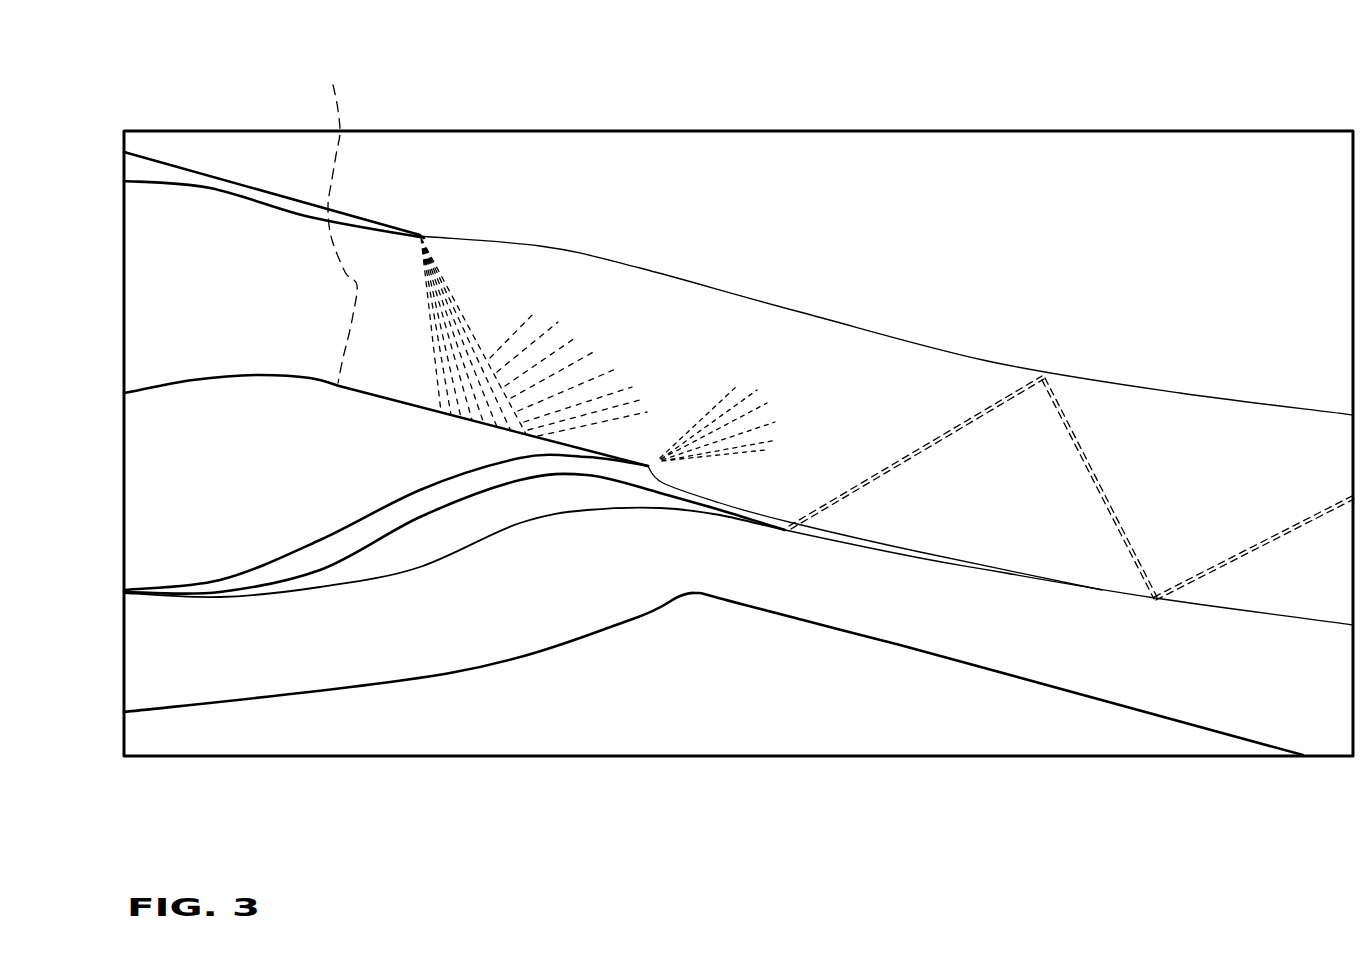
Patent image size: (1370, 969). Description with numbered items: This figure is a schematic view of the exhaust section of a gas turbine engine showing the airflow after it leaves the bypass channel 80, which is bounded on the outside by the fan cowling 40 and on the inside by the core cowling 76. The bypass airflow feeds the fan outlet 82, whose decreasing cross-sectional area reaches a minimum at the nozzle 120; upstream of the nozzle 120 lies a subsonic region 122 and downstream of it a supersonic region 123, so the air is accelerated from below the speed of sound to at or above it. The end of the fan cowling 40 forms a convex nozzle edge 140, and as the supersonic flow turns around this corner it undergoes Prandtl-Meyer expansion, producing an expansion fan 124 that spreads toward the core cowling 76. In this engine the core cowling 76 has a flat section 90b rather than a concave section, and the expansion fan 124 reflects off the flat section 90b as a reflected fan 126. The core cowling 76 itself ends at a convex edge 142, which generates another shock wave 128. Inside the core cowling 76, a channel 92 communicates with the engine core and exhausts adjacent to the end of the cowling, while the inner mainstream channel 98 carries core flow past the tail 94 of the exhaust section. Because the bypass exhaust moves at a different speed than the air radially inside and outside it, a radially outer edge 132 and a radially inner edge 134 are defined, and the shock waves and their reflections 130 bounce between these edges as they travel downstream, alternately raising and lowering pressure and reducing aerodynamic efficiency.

The fan cowling 40 is at (173, 168).
The subsonic region 122 is at (228, 210).
The nozzle 120 is at (329, 218).
The supersonic region 123 is at (392, 275).
The nozzle edge 140 is at (420, 236).
The expansion fan 124 is at (450, 266).
The reflected fan 126 is at (523, 305).
The convex edge 142 is at (648, 466).
The shock wave 128 is at (725, 397).
The reflected shock wave 130 is at (932, 440).
The radially outer edge 132 is at (1125, 392).
The radially inner edge 134 is at (1113, 600).
The tail 94 is at (1065, 713).
The channel 92 is at (427, 497).
The inner mainstream channel 98 is at (678, 572).
The bypass channel 80 is at (165, 326).
The core cowling 76 is at (191, 397).
The flat section 90b is at (350, 393).
The fan outlet 82 is at (359, 325).